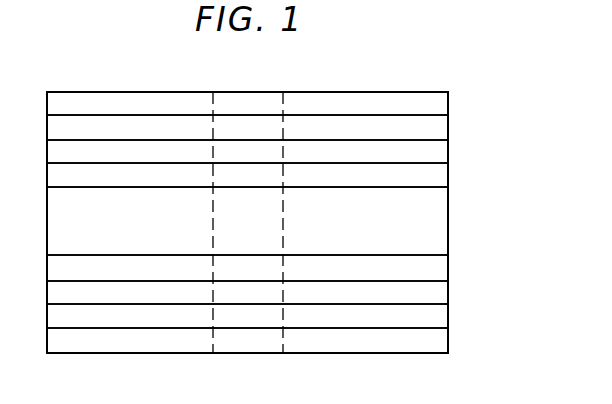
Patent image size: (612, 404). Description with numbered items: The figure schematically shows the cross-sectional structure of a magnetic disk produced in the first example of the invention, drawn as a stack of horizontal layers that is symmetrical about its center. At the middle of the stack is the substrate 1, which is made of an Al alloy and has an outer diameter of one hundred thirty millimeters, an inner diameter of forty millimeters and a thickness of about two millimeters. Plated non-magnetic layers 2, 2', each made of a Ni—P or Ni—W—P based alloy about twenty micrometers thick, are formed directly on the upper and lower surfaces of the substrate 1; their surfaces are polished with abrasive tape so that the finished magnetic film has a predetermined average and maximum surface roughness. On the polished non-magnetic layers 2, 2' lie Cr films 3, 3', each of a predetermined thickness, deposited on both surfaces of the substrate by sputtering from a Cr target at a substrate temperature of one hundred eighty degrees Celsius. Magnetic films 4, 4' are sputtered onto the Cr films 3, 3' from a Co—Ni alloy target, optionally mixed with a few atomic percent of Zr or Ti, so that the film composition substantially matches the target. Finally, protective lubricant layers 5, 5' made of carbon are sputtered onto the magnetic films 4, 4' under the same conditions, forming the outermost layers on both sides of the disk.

The substrate 1 is at (440, 222).
The plated non-magnetic layer 2 is at (270, 174).
The Cr film 3 is at (270, 150).
The magnetic film 4 is at (270, 127).
The protective lubricant layer 5 is at (270, 101).
The plated non-magnetic layer 2' is at (270, 266).
The Cr film 3' is at (270, 290).
The magnetic film 4' is at (270, 315).
The protective lubricant layer 5' is at (270, 340).